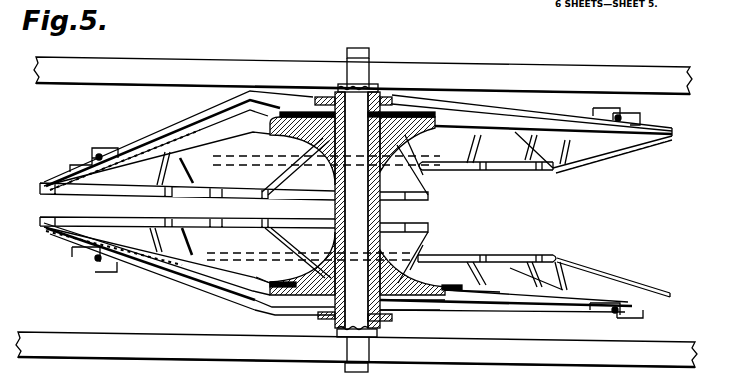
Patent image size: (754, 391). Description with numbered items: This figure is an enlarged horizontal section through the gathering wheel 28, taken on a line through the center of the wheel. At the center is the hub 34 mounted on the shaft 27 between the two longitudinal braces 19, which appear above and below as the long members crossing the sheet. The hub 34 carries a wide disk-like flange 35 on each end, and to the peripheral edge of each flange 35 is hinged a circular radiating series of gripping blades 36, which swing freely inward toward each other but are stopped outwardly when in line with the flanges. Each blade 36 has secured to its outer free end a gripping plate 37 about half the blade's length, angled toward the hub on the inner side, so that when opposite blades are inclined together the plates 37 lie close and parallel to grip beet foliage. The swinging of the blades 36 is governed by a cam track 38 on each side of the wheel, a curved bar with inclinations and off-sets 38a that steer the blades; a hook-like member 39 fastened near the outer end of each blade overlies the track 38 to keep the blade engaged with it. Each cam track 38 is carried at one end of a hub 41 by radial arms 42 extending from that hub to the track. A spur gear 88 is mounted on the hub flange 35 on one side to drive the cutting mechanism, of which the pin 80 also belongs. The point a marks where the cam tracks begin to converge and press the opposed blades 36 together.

The longitudinal brace 19 is at (356, 212).
The shaft 27 is at (352, 304).
The gathering wheel 28 is at (335, 205).
The hub 34 is at (420, 210).
The disk-like flange 35 is at (298, 112).
The gripping blade 36 is at (196, 160).
The gripping plate 37 is at (133, 195).
The cam track 38 is at (98, 156).
The off-set 38a is at (443, 122).
The hook-like member 39 is at (92, 158).
The hub 41 is at (373, 84).
The radial arm 42 is at (210, 125).
The spur gear 88 is at (327, 110).
The point on the cam tracks a is at (450, 120).
The pin 80 is at (213, 388).